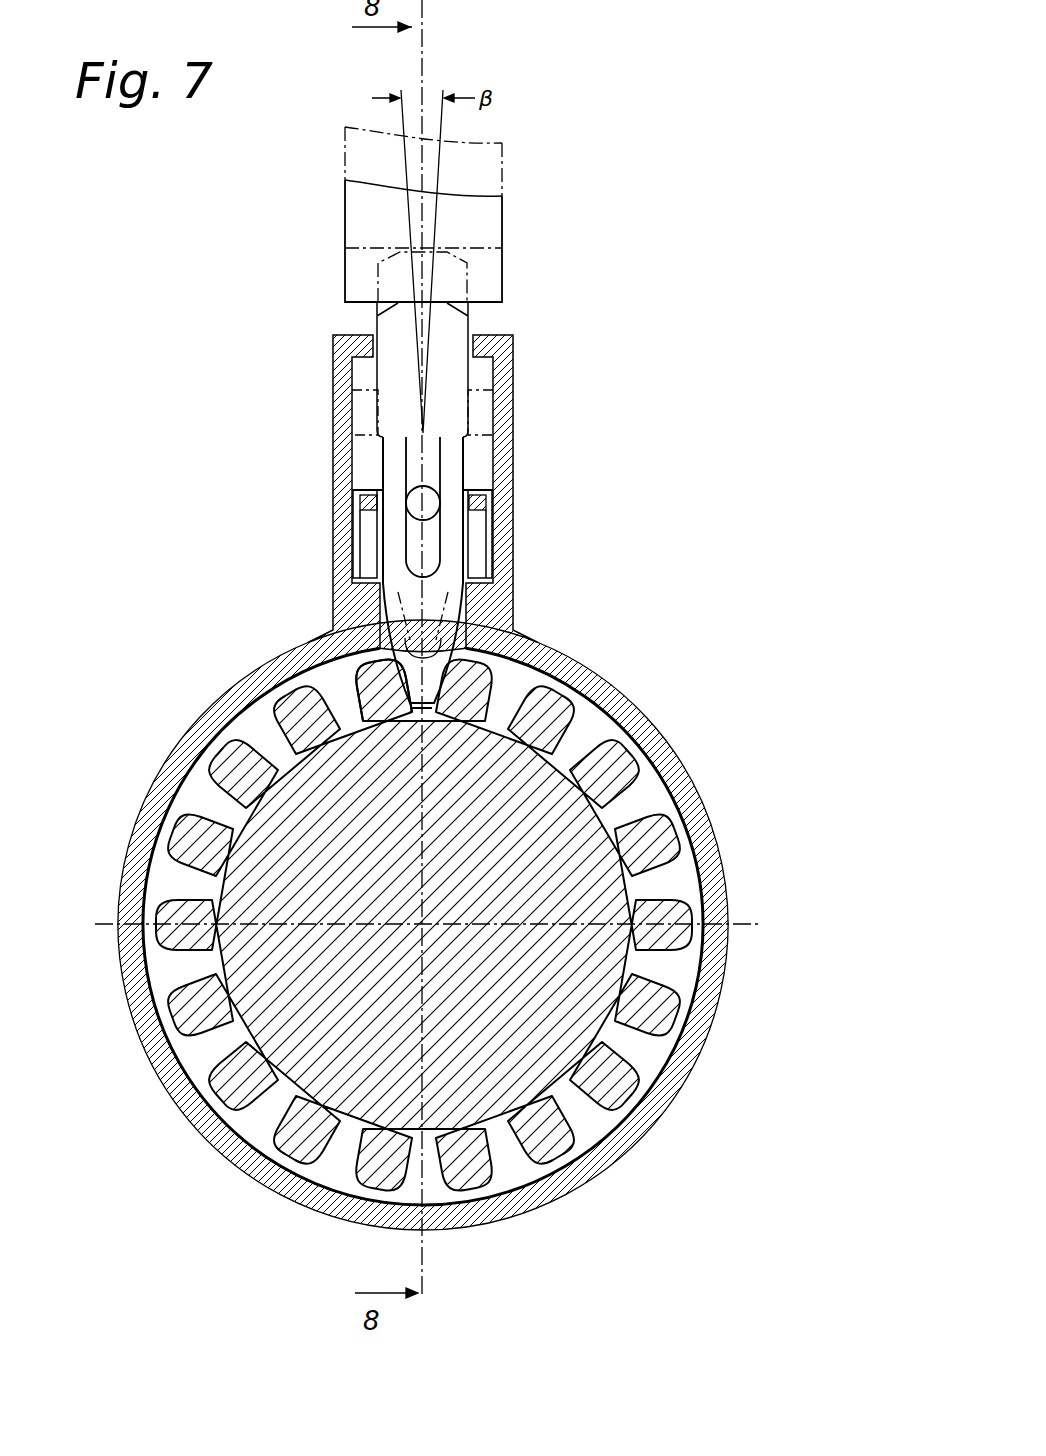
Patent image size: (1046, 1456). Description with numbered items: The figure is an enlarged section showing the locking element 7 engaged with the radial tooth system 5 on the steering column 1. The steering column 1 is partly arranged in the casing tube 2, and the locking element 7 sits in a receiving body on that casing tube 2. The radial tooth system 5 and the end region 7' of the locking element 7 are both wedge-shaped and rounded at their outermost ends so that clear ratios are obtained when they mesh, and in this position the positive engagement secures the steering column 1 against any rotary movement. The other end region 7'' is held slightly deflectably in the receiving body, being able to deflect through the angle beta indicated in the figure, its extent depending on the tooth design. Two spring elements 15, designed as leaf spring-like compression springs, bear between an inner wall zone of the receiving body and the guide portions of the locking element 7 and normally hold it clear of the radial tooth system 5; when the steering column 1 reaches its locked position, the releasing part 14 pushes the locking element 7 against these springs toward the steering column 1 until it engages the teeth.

The steering column 1 is at (233, 697).
The casing tube 2 is at (358, 813).
The radial tooth system 5 is at (292, 712).
The locking element 7 is at (513, 493).
The end region of the locking element 7' is at (552, 645).
The other end region of the locking element 7'' is at (550, 366).
The releasing part 14 is at (490, 277).
The spring elements 15 is at (412, 558).